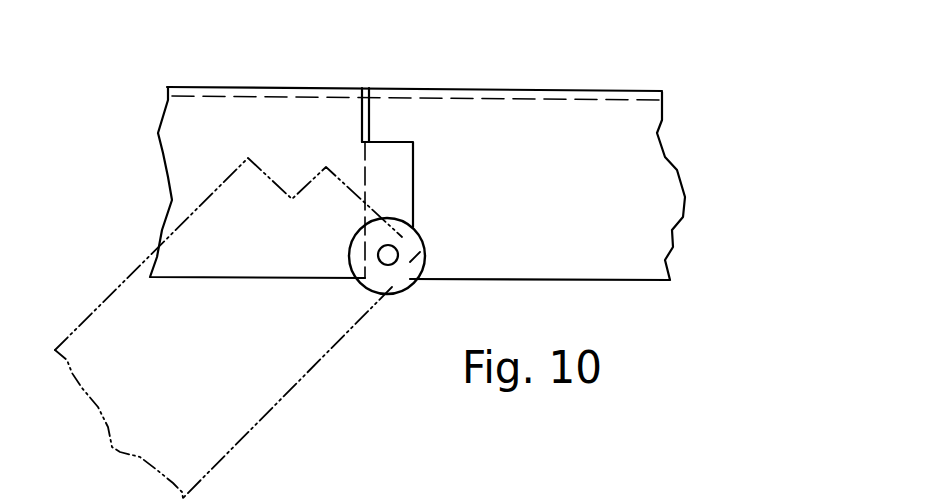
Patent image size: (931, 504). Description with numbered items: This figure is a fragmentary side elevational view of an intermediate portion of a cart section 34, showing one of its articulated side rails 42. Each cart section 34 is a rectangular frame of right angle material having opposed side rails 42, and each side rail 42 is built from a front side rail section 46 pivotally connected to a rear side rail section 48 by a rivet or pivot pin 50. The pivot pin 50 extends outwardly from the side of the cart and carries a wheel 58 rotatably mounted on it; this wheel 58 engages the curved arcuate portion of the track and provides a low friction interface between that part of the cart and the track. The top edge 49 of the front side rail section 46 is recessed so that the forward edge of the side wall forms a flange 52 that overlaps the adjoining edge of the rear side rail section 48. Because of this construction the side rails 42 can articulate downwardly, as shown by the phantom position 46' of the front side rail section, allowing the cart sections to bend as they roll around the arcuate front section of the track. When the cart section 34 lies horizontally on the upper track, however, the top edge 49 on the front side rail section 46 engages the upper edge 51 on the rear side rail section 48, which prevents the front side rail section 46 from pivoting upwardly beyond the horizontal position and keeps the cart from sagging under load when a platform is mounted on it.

The side rail 42 is at (427, 88).
The front side rail section 46 is at (257, 151).
The front side rail section in phantom position 46' is at (217, 328).
The rear side rail section 48 is at (547, 115).
The top edge 49 is at (362, 92).
The upper edge 51 is at (369, 92).
The flange 52 is at (397, 177).
The pivot pin 50 is at (398, 247).
The wheel 58 is at (423, 275).
The cart section 34 is at (646, 497).